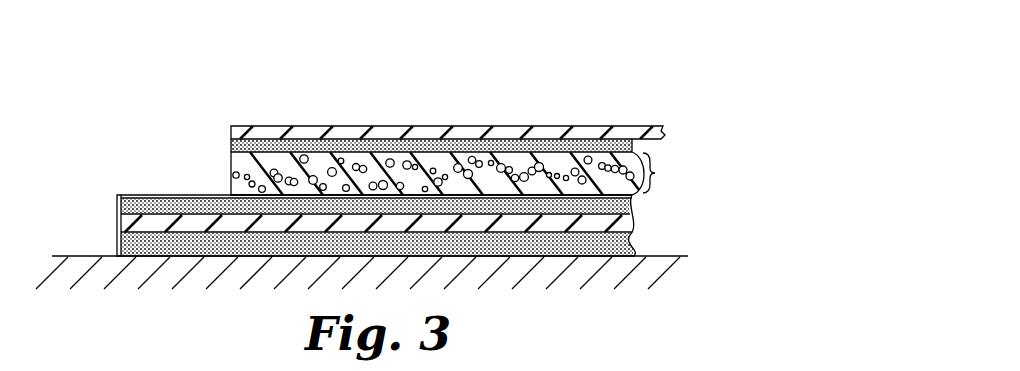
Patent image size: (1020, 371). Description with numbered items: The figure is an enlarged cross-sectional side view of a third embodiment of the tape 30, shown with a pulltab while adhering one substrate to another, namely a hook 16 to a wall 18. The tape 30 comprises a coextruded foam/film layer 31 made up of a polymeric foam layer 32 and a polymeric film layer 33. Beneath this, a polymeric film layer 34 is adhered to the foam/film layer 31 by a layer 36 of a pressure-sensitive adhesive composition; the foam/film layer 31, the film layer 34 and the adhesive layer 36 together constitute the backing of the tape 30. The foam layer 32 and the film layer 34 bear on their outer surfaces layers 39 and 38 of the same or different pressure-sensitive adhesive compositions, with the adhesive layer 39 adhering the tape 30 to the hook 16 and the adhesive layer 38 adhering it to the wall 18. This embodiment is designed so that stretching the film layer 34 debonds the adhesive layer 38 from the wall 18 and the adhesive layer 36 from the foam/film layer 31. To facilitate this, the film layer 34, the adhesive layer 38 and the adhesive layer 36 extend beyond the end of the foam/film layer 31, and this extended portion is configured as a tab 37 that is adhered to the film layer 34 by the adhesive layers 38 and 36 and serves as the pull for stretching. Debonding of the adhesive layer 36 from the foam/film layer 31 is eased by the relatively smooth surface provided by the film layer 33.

The hook 16 is at (483, 126).
The wall 18 is at (663, 253).
The tape 30 is at (720, 170).
The coextruded foam/film layer 31 is at (665, 173).
The polymeric foam layer 32 is at (240, 170).
The polymeric film layer 33 is at (232, 195).
The polymeric film layer 34 is at (636, 216).
The pressure-sensitive adhesive layer 36 is at (121, 206).
The tab 37 is at (133, 195).
The pressure-sensitive adhesive layer 38 is at (122, 245).
The pressure-sensitive adhesive layer 39 is at (231, 148).